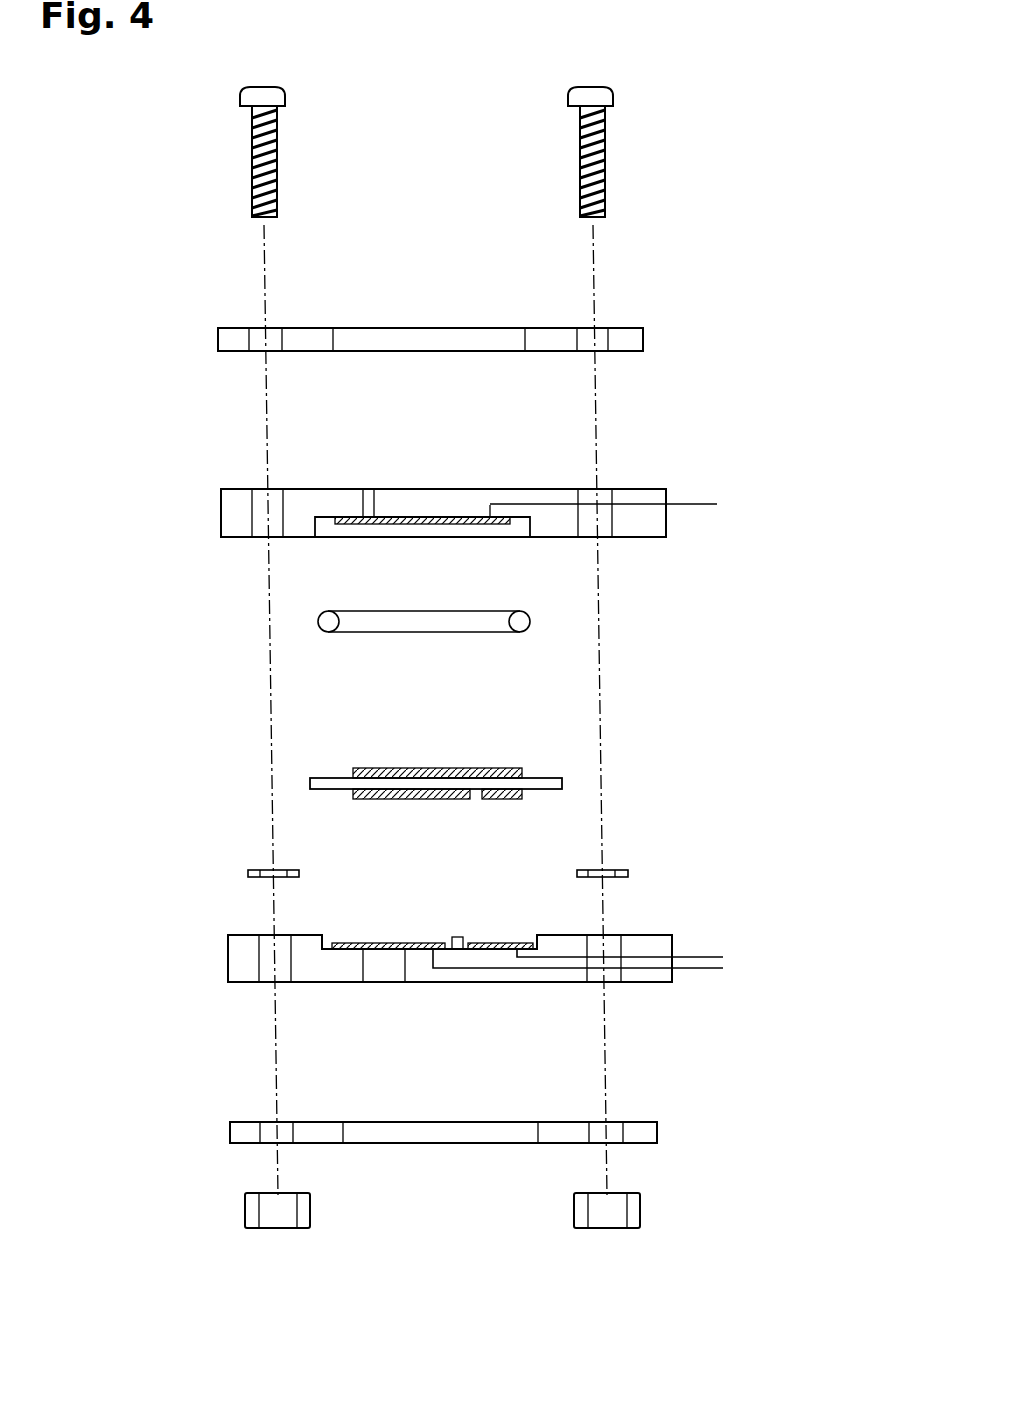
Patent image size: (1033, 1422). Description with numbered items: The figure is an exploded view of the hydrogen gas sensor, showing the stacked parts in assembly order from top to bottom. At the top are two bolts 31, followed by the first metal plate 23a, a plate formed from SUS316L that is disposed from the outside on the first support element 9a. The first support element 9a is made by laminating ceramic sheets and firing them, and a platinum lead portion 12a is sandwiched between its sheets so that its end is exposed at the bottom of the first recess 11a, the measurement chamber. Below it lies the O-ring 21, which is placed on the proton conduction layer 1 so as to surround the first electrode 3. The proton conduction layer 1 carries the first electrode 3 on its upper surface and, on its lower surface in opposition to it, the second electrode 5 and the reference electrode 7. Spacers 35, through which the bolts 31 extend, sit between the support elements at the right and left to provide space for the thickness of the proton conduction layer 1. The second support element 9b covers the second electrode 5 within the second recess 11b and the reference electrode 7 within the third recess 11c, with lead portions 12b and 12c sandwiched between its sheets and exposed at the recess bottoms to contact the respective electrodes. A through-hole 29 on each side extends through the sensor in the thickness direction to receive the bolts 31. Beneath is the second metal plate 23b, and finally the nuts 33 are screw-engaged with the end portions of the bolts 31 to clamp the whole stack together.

The bolt 31 is at (278, 155).
The first metal plate 23a is at (640, 330).
The first support element 9a is at (632, 494).
The lead portion 12a is at (697, 500).
The first recess 11a is at (318, 520).
The O-ring 21 is at (448, 612).
The first electrode 3 is at (423, 768).
The proton conduction layer 1 is at (535, 778).
The second electrode 5 is at (423, 800).
The reference electrode 7 is at (503, 800).
The spacer 35 is at (620, 870).
The second recess 11b is at (322, 940).
The third recess 11c is at (533, 943).
The second support element 9b is at (650, 943).
The lead portion 12c is at (703, 956).
The lead portion 12b is at (703, 970).
The through-hole 29 is at (262, 963).
The second metal plate 23b is at (266, 1145).
The nut 33 is at (280, 1220).